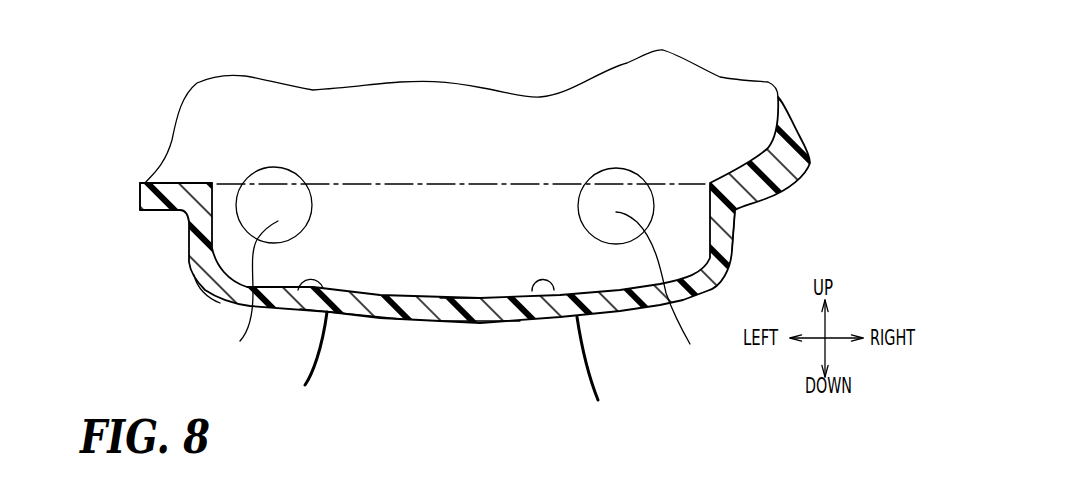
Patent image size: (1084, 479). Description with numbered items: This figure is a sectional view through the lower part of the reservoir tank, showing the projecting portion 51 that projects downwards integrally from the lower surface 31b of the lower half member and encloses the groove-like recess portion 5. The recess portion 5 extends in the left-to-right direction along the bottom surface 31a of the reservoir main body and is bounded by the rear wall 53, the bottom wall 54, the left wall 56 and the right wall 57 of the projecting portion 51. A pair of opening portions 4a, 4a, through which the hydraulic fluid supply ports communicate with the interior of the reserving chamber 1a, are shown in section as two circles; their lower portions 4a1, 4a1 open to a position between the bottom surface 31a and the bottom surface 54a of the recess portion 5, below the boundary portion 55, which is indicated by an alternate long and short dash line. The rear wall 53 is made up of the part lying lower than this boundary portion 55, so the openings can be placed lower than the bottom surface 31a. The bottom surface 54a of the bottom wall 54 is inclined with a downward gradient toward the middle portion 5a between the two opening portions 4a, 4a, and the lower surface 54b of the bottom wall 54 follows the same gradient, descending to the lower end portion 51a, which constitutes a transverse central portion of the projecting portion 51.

The reserving chamber 1a is at (714, 98).
The opening portion 4a is at (267, 163).
The lower portion 4a1 is at (470, 290).
The recess portion 5 is at (350, 150).
The middle portion 5a is at (477, 296).
The bottom surface 31a is at (170, 184).
The lower surface 31b is at (152, 208).
The projecting portion 51 is at (195, 314).
The lower end portion 51a is at (471, 328).
The rear wall 53 is at (511, 213).
The bottom wall 54 is at (351, 313).
The bottom surface 54a is at (303, 306).
The lower surface 54b is at (453, 366).
The boundary portion 55 is at (440, 183).
The left wall 56 is at (195, 246).
The right wall 57 is at (727, 242).